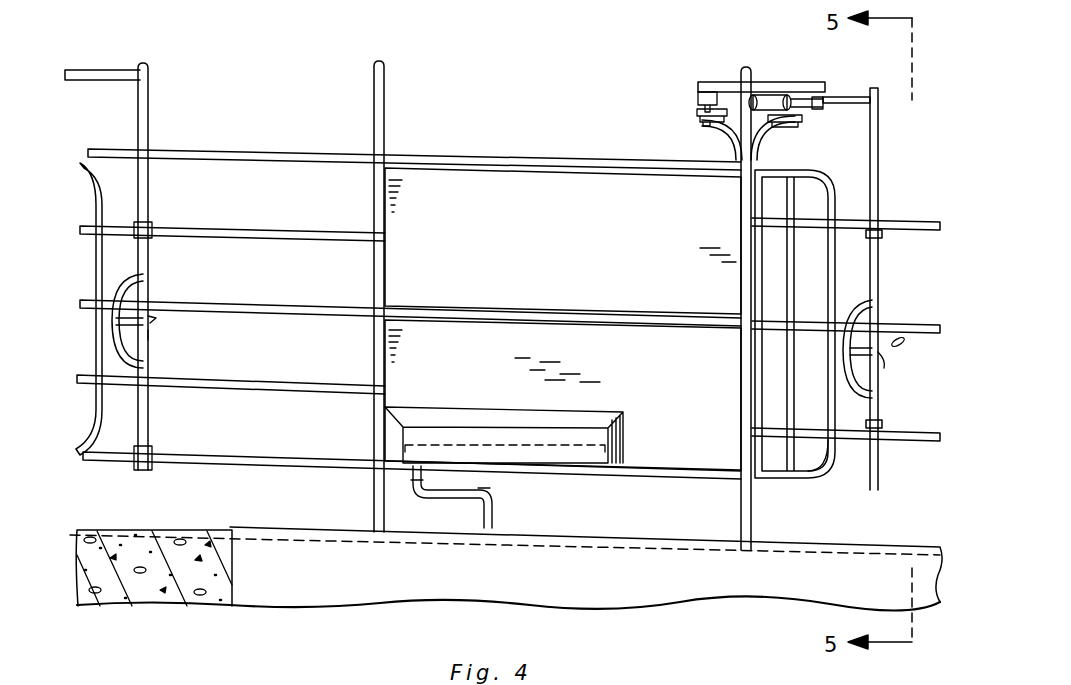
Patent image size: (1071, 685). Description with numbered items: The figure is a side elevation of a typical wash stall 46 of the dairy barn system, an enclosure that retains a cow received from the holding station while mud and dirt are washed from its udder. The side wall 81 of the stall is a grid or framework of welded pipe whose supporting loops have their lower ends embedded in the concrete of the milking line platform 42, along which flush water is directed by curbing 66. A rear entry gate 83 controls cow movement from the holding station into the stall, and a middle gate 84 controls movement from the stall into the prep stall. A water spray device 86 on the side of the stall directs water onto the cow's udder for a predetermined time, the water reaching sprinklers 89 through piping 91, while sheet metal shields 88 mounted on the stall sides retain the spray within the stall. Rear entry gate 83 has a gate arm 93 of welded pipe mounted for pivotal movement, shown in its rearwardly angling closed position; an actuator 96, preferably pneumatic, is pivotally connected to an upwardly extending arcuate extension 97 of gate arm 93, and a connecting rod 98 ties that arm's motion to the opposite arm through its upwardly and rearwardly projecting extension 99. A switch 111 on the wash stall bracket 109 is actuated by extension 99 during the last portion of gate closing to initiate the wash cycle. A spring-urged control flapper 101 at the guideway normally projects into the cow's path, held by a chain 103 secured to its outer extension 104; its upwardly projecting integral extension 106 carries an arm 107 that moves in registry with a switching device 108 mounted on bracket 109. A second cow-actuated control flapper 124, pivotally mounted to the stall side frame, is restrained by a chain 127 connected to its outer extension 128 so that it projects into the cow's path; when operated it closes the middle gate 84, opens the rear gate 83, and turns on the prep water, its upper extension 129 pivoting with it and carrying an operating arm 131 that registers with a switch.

The wash stall 46 is at (596, 98).
The operating arm 131 is at (108, 73).
The upper extension 129 is at (148, 118).
The middle gate 84 is at (100, 129).
The cow-actuated control flapper 124 is at (118, 289).
The chain 127 is at (154, 321).
The outer extension 128 is at (150, 338).
The side wall 81 is at (385, 120).
The sheet metal shields 88 is at (572, 263).
The water spray device 86 is at (601, 404).
The sprinklers 89 is at (478, 445).
The piping 91 is at (482, 494).
The bracket 109 is at (795, 83).
The switch 111 is at (698, 98).
The extension 99 is at (700, 113).
The actuator 96 is at (766, 96).
The switching device 108 is at (806, 106).
The arm 107 is at (847, 98).
The connecting rod 98 is at (712, 126).
The arcuate extension 97 is at (761, 128).
The integral extension 106 is at (878, 158).
The rear entry gate 83 is at (828, 168).
The gate arm 93 is at (829, 460).
The control flapper 101 is at (858, 300).
The chain 103 is at (903, 346).
The outer extension 104 is at (882, 366).
The curbing 66 is at (232, 527).
The milking line platform 42 is at (153, 530).